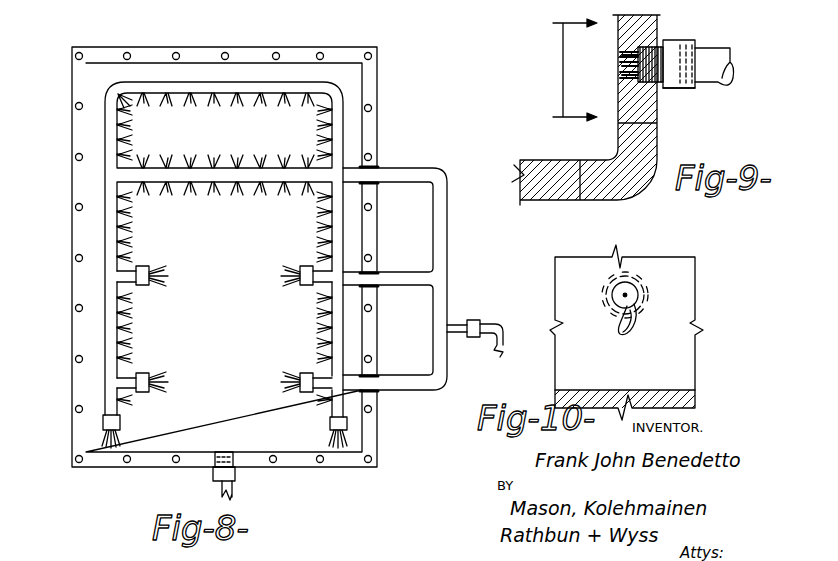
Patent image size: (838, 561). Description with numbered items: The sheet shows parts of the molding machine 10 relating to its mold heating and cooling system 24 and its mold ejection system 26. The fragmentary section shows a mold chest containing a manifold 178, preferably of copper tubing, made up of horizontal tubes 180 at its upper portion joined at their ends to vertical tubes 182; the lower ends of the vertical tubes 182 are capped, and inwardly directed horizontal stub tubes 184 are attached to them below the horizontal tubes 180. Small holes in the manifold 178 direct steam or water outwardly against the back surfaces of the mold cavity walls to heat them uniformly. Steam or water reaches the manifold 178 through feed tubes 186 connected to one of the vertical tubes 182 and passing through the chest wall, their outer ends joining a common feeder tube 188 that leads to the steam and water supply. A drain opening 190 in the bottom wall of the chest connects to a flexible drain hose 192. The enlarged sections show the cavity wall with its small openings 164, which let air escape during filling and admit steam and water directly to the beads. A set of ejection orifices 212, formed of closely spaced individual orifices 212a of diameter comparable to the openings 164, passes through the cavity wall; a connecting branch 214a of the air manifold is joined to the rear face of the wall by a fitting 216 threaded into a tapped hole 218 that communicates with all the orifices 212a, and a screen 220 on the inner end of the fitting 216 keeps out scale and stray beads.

In FIG. 8, the mold heating and cooling system 24 is at (400, 160).
In FIG. 8, the manifold 178 is at (342, 102).
In FIG. 8, the horizontal tubes 180 is at (143, 168).
In FIG. 8, the vertical tubes 182 is at (105, 198).
In FIG. 8, the horizontal stub tubes 184 is at (132, 266).
In FIG. 8, the feed tubes 186 is at (410, 168).
In FIG. 8, the common feeder tube 188 is at (462, 320).
In FIG. 8, the drain openings 190 is at (226, 452).
In FIG. 8, the flexible drain hoses 192 is at (236, 485).
In FIG. 9, the machine 10 is at (566, 71).
In FIG. 9, the small openings 164 is at (618, 123).
In FIG. 10, the small openings 164 is at (675, 354).
In FIG. 9, the sets of ejection orifices 212 is at (640, 57).
In FIG. 10, the sets of ejection orifices 212 is at (636, 282).
In FIG. 9, the individual orifices 212a is at (640, 80).
In FIG. 10, the individual orifices 212a is at (645, 326).
In FIG. 9, the connecting branches 214a is at (712, 48).
In FIG. 9, the fitting 216 is at (690, 88).
In FIG. 9, the tapped hole 218 is at (660, 40).
In FIG. 9, the screen 220 is at (640, 52).
In FIG. 9, the mold ejection system 26 is at (668, 98).